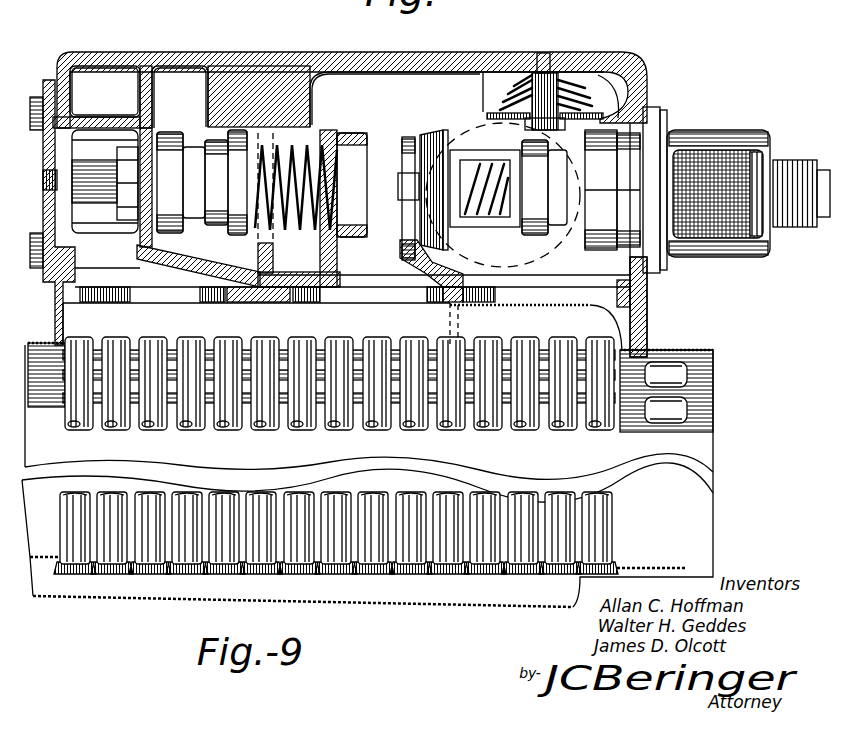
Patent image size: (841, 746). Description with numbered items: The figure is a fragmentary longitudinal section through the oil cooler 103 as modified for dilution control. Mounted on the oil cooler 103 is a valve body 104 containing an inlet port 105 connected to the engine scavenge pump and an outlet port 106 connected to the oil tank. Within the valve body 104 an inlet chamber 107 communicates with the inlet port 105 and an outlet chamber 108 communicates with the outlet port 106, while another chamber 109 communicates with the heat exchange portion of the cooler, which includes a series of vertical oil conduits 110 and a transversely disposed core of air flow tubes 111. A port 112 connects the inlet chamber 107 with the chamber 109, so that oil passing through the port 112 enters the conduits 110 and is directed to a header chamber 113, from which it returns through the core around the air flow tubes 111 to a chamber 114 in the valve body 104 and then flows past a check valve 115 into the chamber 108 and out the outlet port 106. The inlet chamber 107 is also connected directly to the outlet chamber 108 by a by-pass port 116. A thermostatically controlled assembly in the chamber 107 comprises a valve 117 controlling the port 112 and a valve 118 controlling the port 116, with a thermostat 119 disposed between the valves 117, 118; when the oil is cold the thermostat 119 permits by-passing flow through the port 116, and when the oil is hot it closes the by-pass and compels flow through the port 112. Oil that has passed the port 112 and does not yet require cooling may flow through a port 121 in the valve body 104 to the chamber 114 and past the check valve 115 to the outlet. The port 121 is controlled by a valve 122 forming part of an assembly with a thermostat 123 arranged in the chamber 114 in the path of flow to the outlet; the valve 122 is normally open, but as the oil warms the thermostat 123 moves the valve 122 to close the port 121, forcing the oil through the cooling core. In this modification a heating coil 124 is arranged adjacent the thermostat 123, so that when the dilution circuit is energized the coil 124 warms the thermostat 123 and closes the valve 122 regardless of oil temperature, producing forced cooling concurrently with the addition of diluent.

The oil cooler 103 is at (618, 398).
The valve body 104 is at (650, 77).
The inlet port 105 is at (190, 137).
The outlet port 106 is at (470, 112).
The inlet chamber 107 is at (163, 72).
The outlet chamber 108 is at (328, 82).
The chamber 109 is at (80, 70).
The vertical oil conduits 110 is at (78, 345).
The air flow tubes 111 is at (688, 409).
The port 112 is at (107, 120).
The header chamber 113 is at (117, 585).
The chamber 114 is at (613, 263).
The check valve 115 is at (598, 75).
The by-pass port 116 is at (268, 125).
The valve 117 is at (123, 257).
The valve 118 is at (232, 260).
The thermostat 119 is at (197, 125).
The port 121 is at (400, 218).
The valve 122 is at (430, 133).
The thermostat 123 is at (565, 230).
The heating coil 124 is at (710, 150).